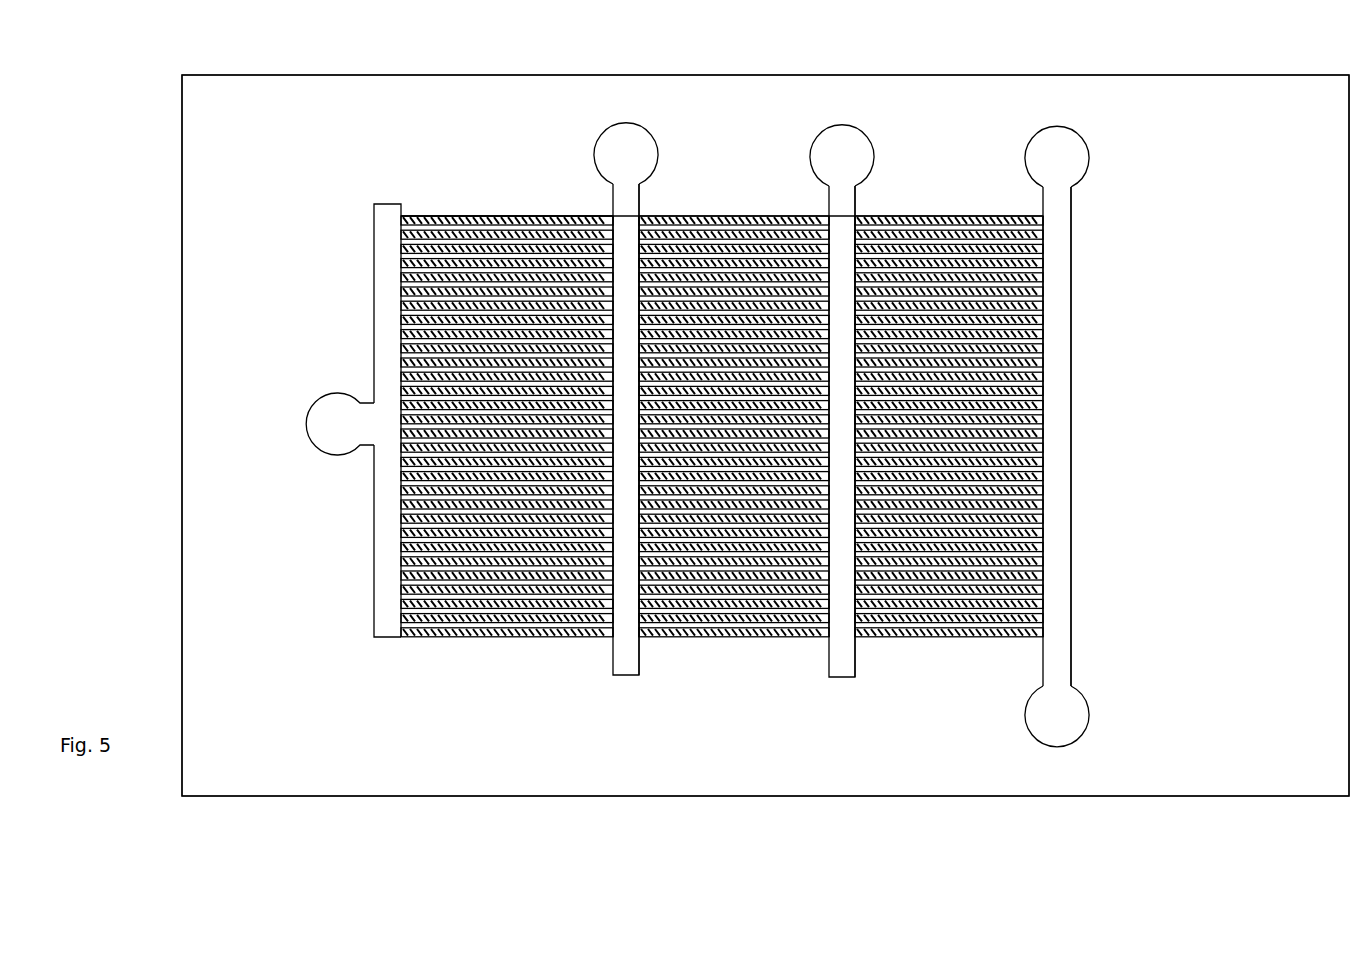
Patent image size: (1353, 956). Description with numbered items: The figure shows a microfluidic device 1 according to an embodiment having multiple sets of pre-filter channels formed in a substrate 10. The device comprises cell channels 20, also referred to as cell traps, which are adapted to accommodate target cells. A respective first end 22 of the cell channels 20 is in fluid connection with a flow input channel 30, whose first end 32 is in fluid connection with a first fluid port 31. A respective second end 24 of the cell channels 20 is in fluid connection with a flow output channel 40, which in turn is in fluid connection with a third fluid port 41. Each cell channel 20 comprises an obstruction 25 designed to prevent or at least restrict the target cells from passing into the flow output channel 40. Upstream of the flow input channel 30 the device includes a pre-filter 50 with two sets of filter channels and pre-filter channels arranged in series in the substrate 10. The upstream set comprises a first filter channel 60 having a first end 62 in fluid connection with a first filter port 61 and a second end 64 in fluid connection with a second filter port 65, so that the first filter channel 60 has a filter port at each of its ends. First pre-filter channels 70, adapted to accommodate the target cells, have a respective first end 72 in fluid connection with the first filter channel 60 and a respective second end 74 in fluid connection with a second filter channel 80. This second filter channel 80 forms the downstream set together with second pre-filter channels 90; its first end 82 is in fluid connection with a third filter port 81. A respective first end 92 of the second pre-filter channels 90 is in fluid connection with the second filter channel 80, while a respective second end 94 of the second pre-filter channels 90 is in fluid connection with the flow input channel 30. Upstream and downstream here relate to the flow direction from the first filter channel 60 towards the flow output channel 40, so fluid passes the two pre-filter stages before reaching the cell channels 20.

The microfluidic device 1 is at (123, 143).
The substrate 10 is at (182, 320).
The cell channels 20 is at (504, 638).
The first end of the cell channels 22 is at (598, 638).
The second end of the cell channels 24 is at (406, 638).
The obstruction 25 is at (413, 214).
The flow input channel 30 is at (624, 676).
The first fluid port 31 is at (595, 157).
The first end of the flow input channel 32 is at (640, 200).
The flow output channel 40 is at (372, 310).
The third fluid port 41 is at (305, 410).
The pre-filter 50 is at (955, 130).
The first filter channel 60 is at (1072, 428).
The first filter port 61 is at (1090, 158).
The first end of the first filter channel 62 is at (1072, 204).
The second end of the first filter channel 64 is at (1072, 658).
The second filter port 65 is at (1090, 714).
The first pre-filter channels 70 is at (939, 638).
The first end of the first pre-filter channels 72 is at (1036, 644).
The second end of the first pre-filter channels 74 is at (865, 638).
The second filter channel 80 is at (842, 678).
The third filter port 81 is at (810, 157).
The first end of the second filter channel 82 is at (856, 205).
The second pre-filter channels 90 is at (727, 638).
The first end of the second pre-filter channels 92 is at (818, 638).
The second end of the second pre-filter channels 94 is at (648, 638).